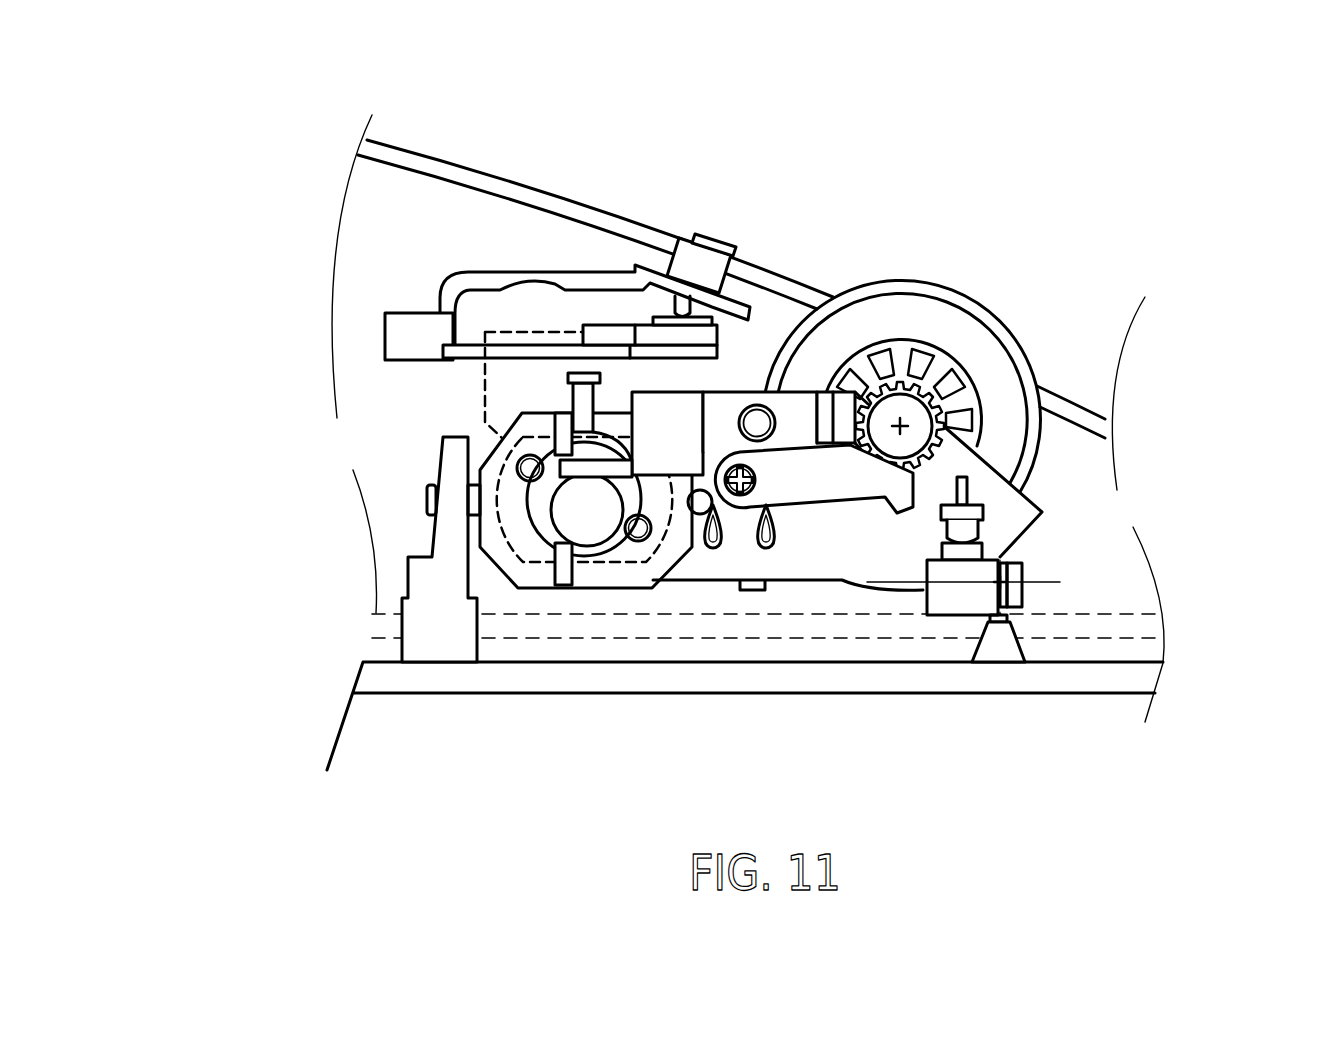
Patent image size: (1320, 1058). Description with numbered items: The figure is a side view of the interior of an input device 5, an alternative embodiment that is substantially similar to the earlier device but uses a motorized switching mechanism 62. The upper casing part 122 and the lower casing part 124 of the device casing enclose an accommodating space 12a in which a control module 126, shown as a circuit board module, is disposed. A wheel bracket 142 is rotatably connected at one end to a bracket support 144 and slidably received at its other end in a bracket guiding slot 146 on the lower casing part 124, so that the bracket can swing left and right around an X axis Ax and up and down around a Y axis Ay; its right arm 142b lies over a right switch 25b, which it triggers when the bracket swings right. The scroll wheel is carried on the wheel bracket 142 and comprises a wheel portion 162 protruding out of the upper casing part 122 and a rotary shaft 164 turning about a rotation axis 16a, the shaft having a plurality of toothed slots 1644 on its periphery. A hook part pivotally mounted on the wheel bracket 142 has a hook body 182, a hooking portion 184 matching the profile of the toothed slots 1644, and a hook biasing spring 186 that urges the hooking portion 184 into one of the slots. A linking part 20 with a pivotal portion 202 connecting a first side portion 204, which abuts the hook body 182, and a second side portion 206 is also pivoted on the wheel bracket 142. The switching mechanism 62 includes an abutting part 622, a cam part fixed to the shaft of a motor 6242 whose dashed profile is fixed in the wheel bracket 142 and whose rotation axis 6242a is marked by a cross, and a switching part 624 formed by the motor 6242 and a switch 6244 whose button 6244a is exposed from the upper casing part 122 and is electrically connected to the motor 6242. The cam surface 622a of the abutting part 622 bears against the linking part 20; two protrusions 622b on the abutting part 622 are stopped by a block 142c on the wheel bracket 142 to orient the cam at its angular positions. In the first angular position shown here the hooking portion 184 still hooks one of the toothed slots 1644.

The input device 5 is at (1133, 131).
The accommodating space 12a is at (393, 215).
The upper casing part 122 is at (505, 187).
The lower casing part 124 is at (1002, 687).
The control module 126 is at (1110, 613).
The wheel bracket 142 is at (797, 570).
The right arm 142b is at (965, 528).
The block 142c is at (586, 413).
The bracket support 144 is at (1020, 647).
The bracket guiding slot 146 is at (442, 590).
The wheel portion 162 is at (963, 327).
The rotary shaft 164 is at (903, 407).
The toothed slots 1644 is at (937, 407).
The rotation axis 16a is at (914, 436).
The hook body 182 is at (837, 487).
The hooking portion 184 is at (913, 475).
The hook biasing spring 186 is at (717, 547).
The linking part 20 is at (931, 190).
The pivotal portion 202 is at (755, 393).
The first side portion 204 is at (838, 423).
The second side portion 206 is at (648, 415).
The right switch 25b is at (950, 607).
The switching mechanism 62 is at (134, 344).
The abutting part 622 is at (431, 456).
The cam surface 622a is at (607, 547).
The protrusions 622b is at (563, 425).
The switching part 624 is at (204, 281).
The motor 6242 is at (503, 467).
The rotation axis 6242a is at (592, 515).
The switch 6244 is at (368, 289).
The button 6244a is at (705, 233).
The X axis Ax is at (1042, 566).
The Y axis Ay is at (989, 592).